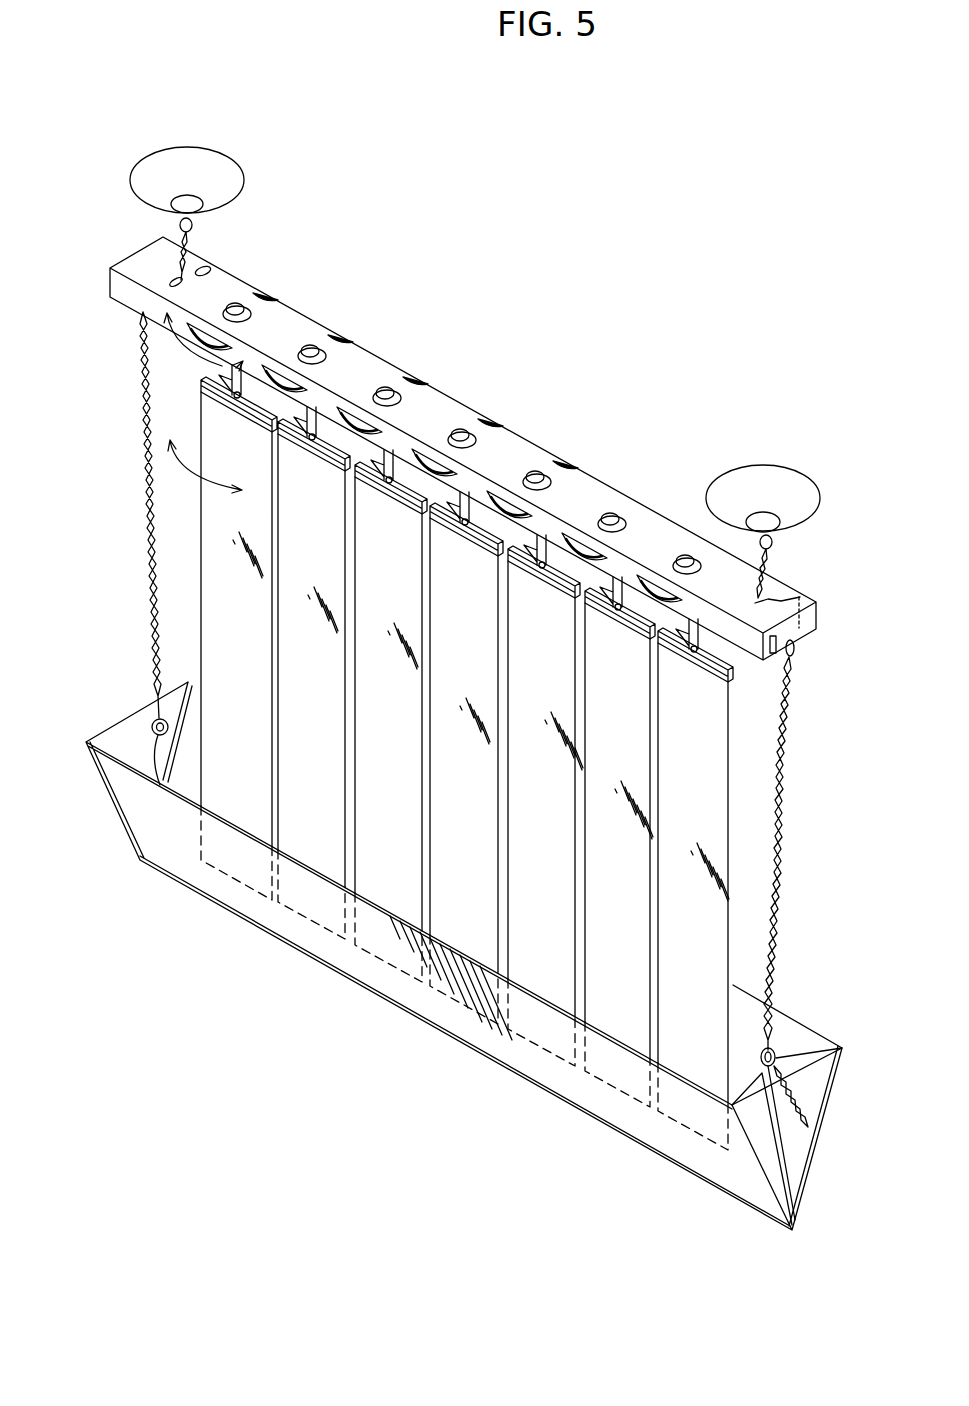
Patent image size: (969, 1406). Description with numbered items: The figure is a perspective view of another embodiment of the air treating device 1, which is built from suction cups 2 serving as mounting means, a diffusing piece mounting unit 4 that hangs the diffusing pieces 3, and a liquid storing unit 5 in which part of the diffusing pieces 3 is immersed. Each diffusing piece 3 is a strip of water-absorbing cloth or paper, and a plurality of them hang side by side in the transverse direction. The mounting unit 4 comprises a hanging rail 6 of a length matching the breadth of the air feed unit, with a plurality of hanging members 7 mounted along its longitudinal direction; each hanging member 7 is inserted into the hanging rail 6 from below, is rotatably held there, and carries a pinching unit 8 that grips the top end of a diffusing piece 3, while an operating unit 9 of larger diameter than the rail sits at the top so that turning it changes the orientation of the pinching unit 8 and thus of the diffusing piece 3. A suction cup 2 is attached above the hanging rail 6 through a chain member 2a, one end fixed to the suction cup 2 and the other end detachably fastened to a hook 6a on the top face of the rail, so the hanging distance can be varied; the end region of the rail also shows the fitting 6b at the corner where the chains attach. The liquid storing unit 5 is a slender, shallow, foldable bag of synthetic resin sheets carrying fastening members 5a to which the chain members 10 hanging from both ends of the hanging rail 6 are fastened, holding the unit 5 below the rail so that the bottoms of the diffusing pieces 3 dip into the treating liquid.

The air treating device 1 is at (639, 256).
The suction cup 2 is at (228, 183).
The chain member 2a is at (192, 262).
The diffusing piece 3 is at (455, 695).
The diffusing piece mounting unit 4 is at (572, 442).
The liquid storing unit 5 is at (300, 930).
The fastening member 5a is at (188, 684).
The hanging rail 6 is at (440, 417).
The hook 6a is at (172, 282).
The chain link 6b is at (776, 626).
The hanging member 7 is at (284, 442).
The pinching unit 8 is at (330, 462).
The operating unit 9 is at (192, 343).
The chain member 10 is at (143, 525).